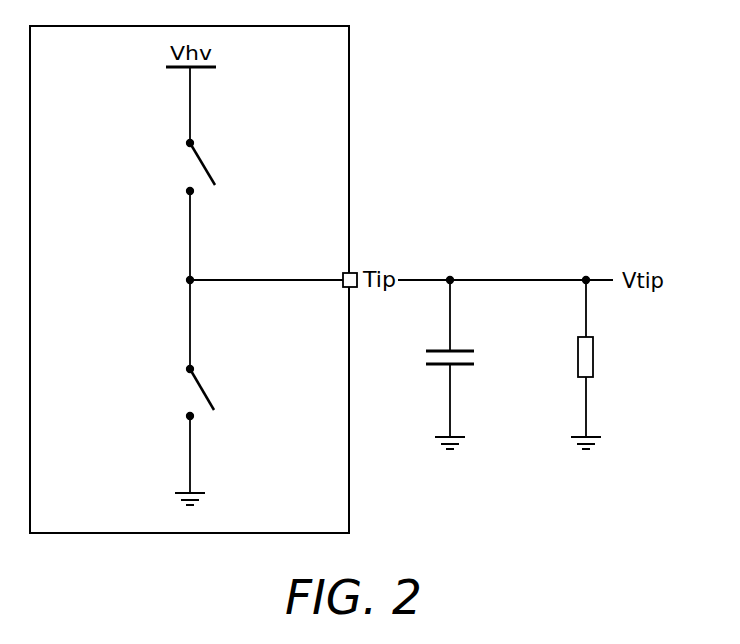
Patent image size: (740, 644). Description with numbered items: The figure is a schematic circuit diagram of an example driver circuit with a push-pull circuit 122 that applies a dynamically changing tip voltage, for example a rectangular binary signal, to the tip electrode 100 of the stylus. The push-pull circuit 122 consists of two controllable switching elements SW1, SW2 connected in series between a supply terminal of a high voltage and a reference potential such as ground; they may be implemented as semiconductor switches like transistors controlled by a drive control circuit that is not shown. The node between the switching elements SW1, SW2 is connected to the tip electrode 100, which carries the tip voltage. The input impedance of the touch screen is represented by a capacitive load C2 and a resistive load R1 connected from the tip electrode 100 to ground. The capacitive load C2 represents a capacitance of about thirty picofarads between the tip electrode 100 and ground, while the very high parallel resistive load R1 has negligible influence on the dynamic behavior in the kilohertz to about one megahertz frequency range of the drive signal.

The push-pull circuit 122 is at (349, 40).
The tip electrode 100 is at (344, 276).
The controllable switching element SW1 is at (231, 167).
The controllable switching element SW2 is at (231, 393).
The capacitive load C2 is at (469, 364).
The resistive load R1 is at (602, 364).